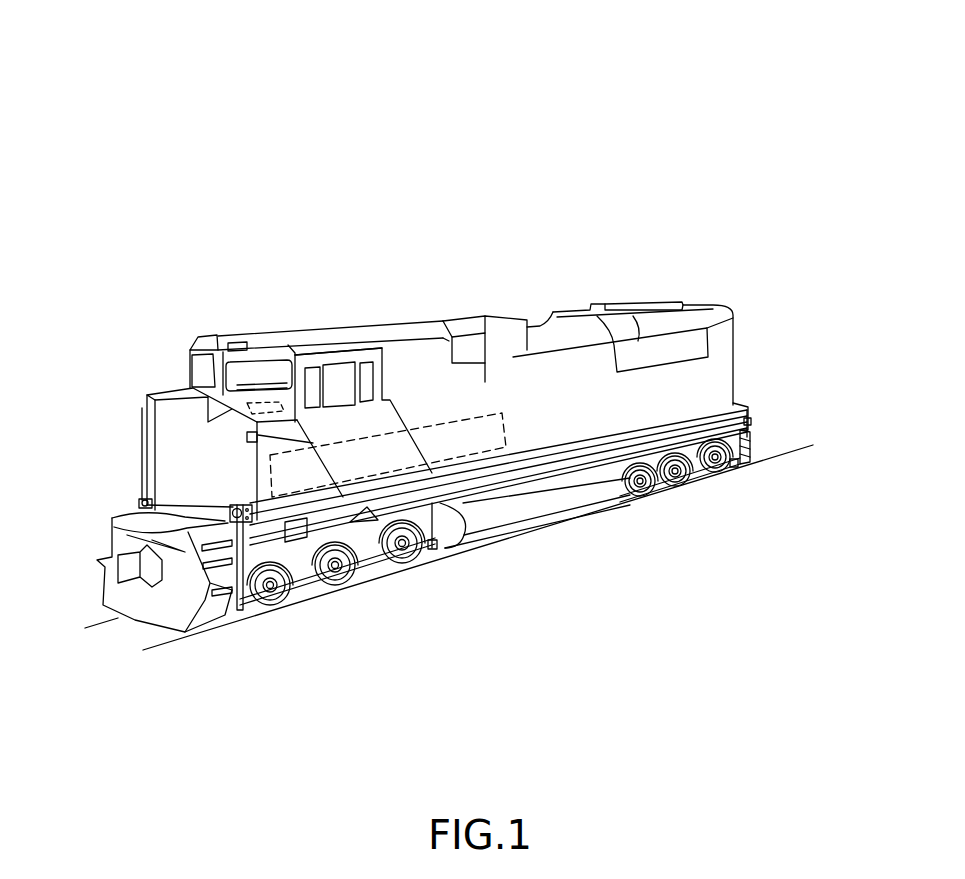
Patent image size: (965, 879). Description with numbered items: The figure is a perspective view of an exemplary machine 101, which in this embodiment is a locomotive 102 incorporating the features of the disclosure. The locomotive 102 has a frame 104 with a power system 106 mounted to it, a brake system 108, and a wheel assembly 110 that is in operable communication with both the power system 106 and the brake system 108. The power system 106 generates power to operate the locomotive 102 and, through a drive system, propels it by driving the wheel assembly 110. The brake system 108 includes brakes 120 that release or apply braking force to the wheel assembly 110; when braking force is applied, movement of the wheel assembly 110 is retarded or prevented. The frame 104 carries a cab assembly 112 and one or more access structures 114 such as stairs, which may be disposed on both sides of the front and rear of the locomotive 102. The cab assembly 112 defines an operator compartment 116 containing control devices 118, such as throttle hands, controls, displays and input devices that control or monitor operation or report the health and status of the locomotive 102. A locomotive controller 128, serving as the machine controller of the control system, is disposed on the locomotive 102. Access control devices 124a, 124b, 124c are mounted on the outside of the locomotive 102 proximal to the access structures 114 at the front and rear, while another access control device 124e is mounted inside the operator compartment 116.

The locomotive 101 is at (223, 99).
The locomotive 102 is at (435, 451).
The frame 104 is at (547, 325).
The power system 106 is at (338, 573).
The brake system 108 is at (430, 568).
The wheel assembly 110 is at (340, 592).
The cab assembly 112 is at (253, 356).
The access structures 114 is at (112, 518).
The operator compartment 116 is at (248, 374).
The control devices 118 is at (278, 392).
The brakes 120 is at (436, 548).
The access control device 124a is at (292, 483).
The access control device 124b is at (143, 498).
The access control device 124c is at (752, 423).
The access control device 124e is at (237, 375).
The locomotive controller 128 is at (296, 368).